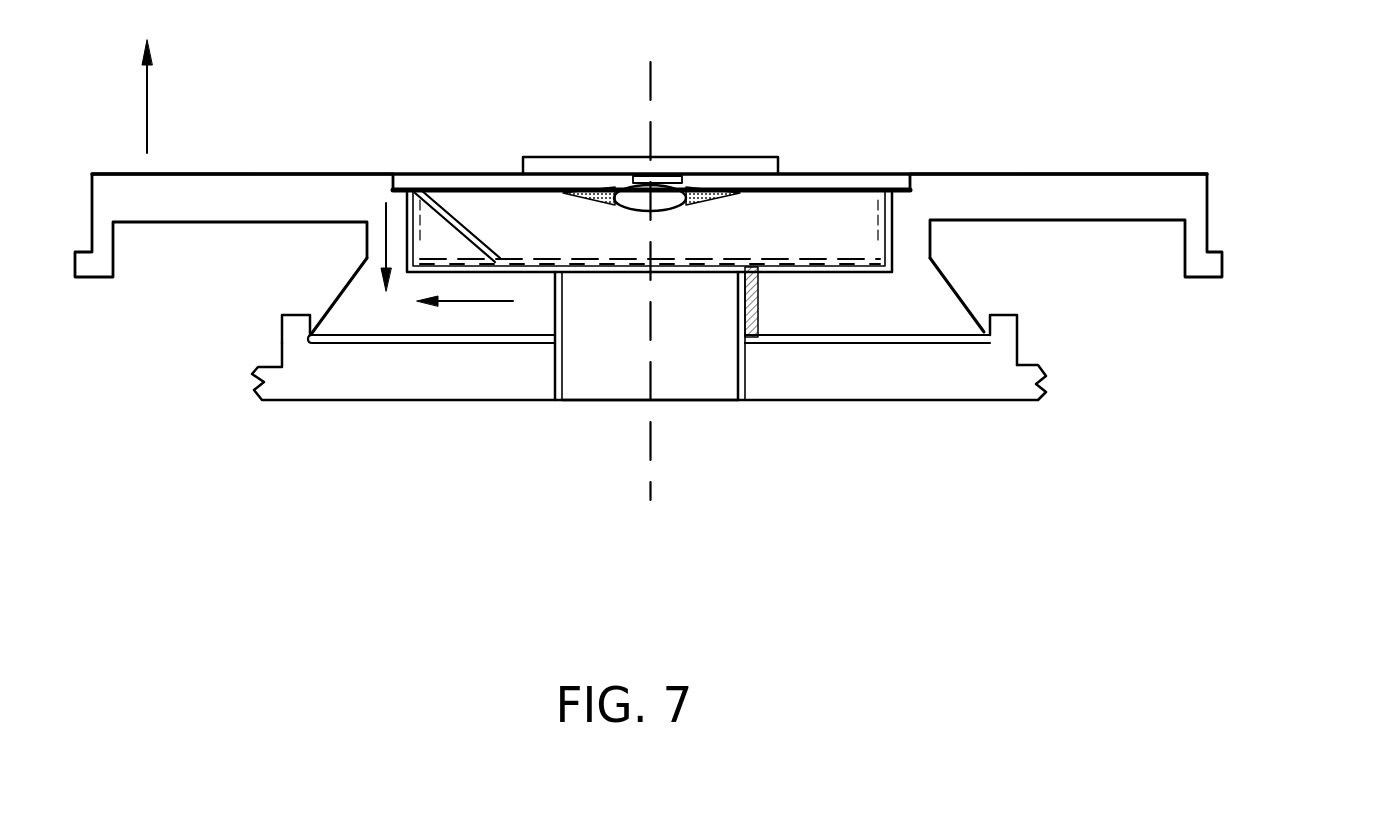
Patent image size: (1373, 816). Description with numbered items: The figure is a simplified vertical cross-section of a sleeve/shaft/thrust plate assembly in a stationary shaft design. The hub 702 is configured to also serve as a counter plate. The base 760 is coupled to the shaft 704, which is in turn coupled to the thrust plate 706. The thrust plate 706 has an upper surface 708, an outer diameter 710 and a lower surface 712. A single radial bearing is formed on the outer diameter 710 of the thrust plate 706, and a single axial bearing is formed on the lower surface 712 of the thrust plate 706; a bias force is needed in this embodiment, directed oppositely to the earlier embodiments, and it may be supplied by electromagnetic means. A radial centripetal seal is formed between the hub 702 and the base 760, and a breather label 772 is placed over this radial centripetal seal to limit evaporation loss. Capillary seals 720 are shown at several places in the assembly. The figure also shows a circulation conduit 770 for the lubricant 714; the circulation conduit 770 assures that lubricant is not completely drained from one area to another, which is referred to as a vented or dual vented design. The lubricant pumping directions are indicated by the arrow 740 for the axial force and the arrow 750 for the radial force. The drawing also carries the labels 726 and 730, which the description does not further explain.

The hub 702 is at (1190, 207).
The shaft 704 is at (617, 385).
The thrust plate 706 is at (743, 256).
The upper surface 708 is at (770, 205).
The outer diameter 710 is at (892, 228).
The lower surface 712 is at (813, 273).
The lubricant 714 is at (890, 345).
The capillary seals 720 is at (607, 188).
The membrane 726 is at (892, 258).
The direction arrow 730 is at (147, 108).
The lubricant pumping direction (axial force) 740 is at (367, 258).
The lubricant pumping direction (radial force) 750 is at (483, 307).
The base 760 is at (358, 390).
The circulation conduit 770 is at (455, 229).
The breather label 772 is at (673, 166).